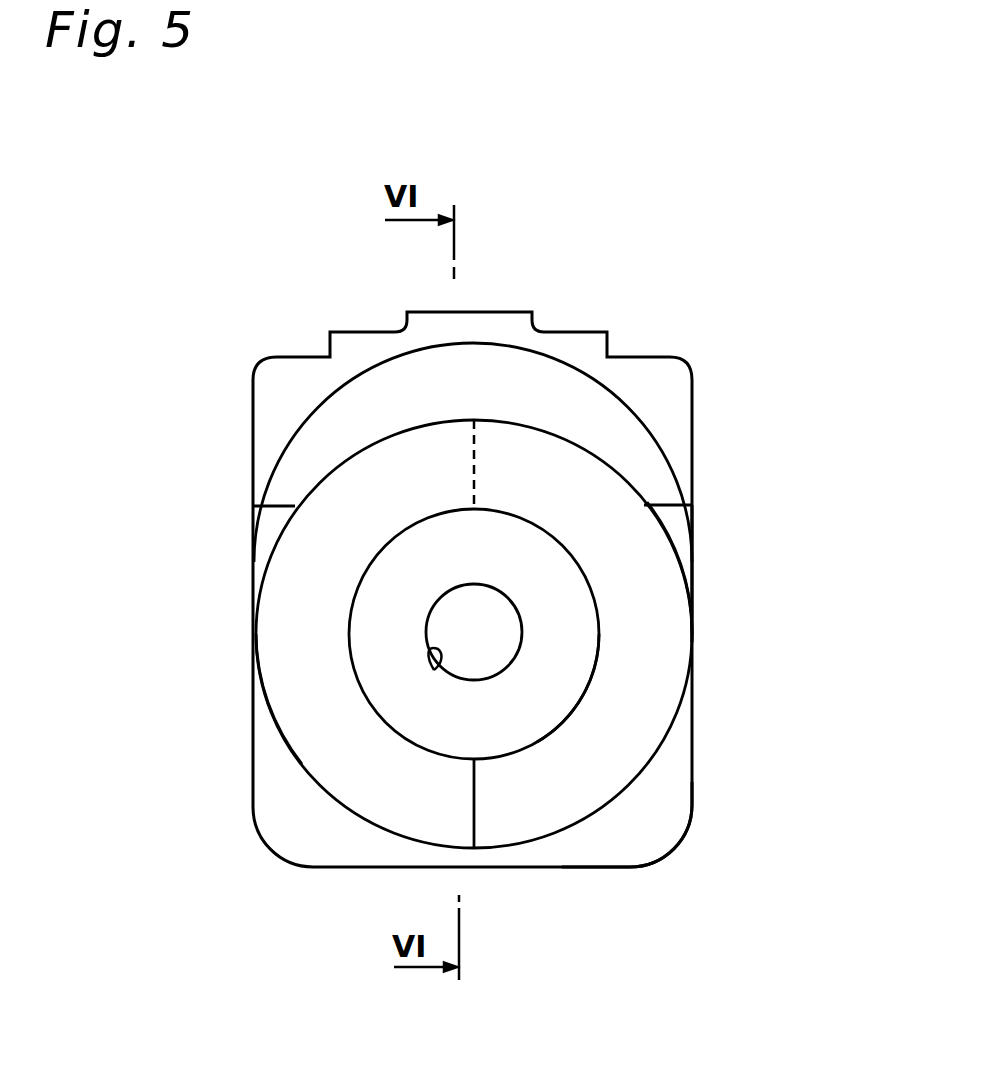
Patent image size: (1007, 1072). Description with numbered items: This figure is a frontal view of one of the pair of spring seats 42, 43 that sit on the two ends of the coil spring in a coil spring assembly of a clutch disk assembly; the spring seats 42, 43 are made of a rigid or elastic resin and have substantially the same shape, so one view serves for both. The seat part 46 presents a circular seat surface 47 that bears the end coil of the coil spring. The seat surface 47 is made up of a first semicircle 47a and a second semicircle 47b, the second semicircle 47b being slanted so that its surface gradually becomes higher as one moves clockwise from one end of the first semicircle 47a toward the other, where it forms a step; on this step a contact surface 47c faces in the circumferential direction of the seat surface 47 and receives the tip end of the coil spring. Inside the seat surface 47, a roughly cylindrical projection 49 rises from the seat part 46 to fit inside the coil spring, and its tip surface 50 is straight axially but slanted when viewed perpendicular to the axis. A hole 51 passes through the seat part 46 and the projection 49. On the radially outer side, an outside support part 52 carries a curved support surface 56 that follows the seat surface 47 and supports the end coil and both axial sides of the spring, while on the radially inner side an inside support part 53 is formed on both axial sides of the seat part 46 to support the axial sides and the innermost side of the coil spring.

The spring seat 42 is at (559, 540).
The spring seat 43 is at (680, 307).
The seat part 46 is at (698, 532).
The seat surface 47 is at (648, 620).
The first semicircle 47a is at (275, 663).
The second semicircle 47b is at (633, 588).
The contact surface 47c is at (471, 803).
The projection 49 is at (603, 677).
The tip surface 50 is at (535, 555).
The hole 51 is at (432, 668).
The outside support part 52 is at (268, 416).
The inside support part 53 is at (657, 797).
The support surface 56 is at (453, 383).